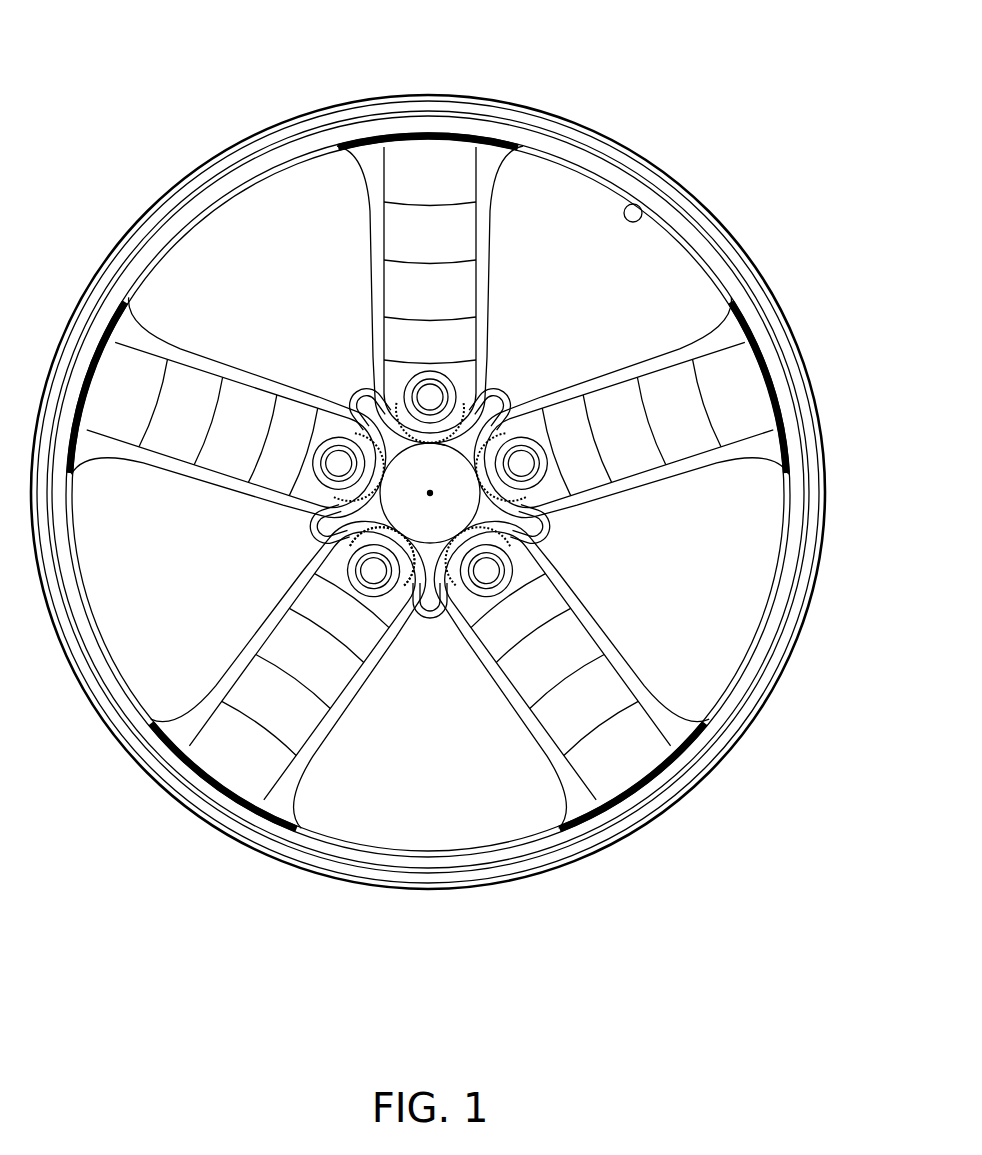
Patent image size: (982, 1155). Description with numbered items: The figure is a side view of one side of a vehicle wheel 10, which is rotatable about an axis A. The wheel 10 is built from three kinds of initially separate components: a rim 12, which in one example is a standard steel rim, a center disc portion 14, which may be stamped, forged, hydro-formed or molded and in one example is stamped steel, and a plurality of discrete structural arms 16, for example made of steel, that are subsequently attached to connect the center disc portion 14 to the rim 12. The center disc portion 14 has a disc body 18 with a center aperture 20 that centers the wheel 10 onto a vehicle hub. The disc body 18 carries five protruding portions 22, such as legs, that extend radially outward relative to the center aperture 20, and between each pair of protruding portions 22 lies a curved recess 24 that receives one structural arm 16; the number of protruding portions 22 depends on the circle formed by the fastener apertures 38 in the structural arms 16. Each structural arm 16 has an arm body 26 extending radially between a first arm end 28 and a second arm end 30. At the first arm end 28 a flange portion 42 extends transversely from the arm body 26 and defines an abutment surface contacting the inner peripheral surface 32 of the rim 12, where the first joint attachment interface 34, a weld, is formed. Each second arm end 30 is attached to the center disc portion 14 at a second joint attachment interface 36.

The vehicle wheel 10 is at (755, 122).
The rim 12 is at (577, 130).
The center disc portion 14 is at (370, 508).
The structural arms 16 is at (413, 193).
The disc body 18 is at (429, 486).
The center aperture 20 is at (437, 445).
The protruding portions 22 is at (360, 398).
The curved recess 24 is at (375, 458).
The arm body 26 is at (443, 283).
The first arm end 28 is at (444, 160).
The second arm end 30 is at (461, 366).
The inner peripheral surface 32 is at (153, 288).
The first joint attachment interface 34 is at (262, 820).
The second joint attachment interface 36 is at (406, 582).
The fastener apertures 38 is at (427, 392).
The flange portion 42 is at (346, 150).
The axis A is at (440, 475).